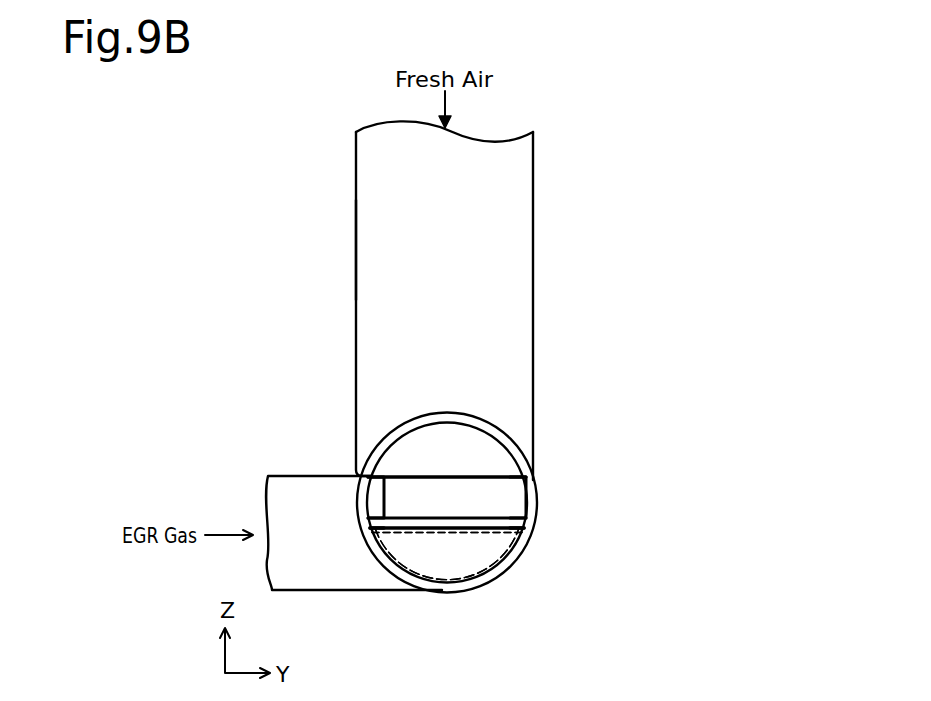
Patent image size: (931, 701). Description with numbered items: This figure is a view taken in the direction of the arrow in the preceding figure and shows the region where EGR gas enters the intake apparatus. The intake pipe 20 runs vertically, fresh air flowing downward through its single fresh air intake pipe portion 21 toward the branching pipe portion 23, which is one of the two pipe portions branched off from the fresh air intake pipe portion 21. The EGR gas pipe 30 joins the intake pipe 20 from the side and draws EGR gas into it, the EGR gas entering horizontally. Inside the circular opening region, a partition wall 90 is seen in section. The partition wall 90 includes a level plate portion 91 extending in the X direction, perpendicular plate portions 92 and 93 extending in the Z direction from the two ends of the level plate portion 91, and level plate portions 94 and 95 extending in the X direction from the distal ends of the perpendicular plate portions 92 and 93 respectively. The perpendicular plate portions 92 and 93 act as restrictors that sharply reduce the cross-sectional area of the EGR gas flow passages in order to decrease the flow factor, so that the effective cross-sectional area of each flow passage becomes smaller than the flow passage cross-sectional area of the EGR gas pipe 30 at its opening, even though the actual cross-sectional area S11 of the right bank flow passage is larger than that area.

The intake pipe 20 is at (356, 178).
The fresh air intake pipe portion 21 is at (356, 255).
The branching pipe portion 23 is at (478, 417).
The EGR gas pipe 30 is at (314, 475).
The partition wall 90 is at (438, 475).
The level plate portion 91 is at (408, 477).
The perpendicular plate portion 92 is at (513, 500).
The perpendicular plate portion 93 is at (547, 536).
The level plate portion 94 is at (385, 517).
The level plate portion 95 is at (343, 541).
The actual cross-sectional area of right bank flow passage S11 is at (492, 567).